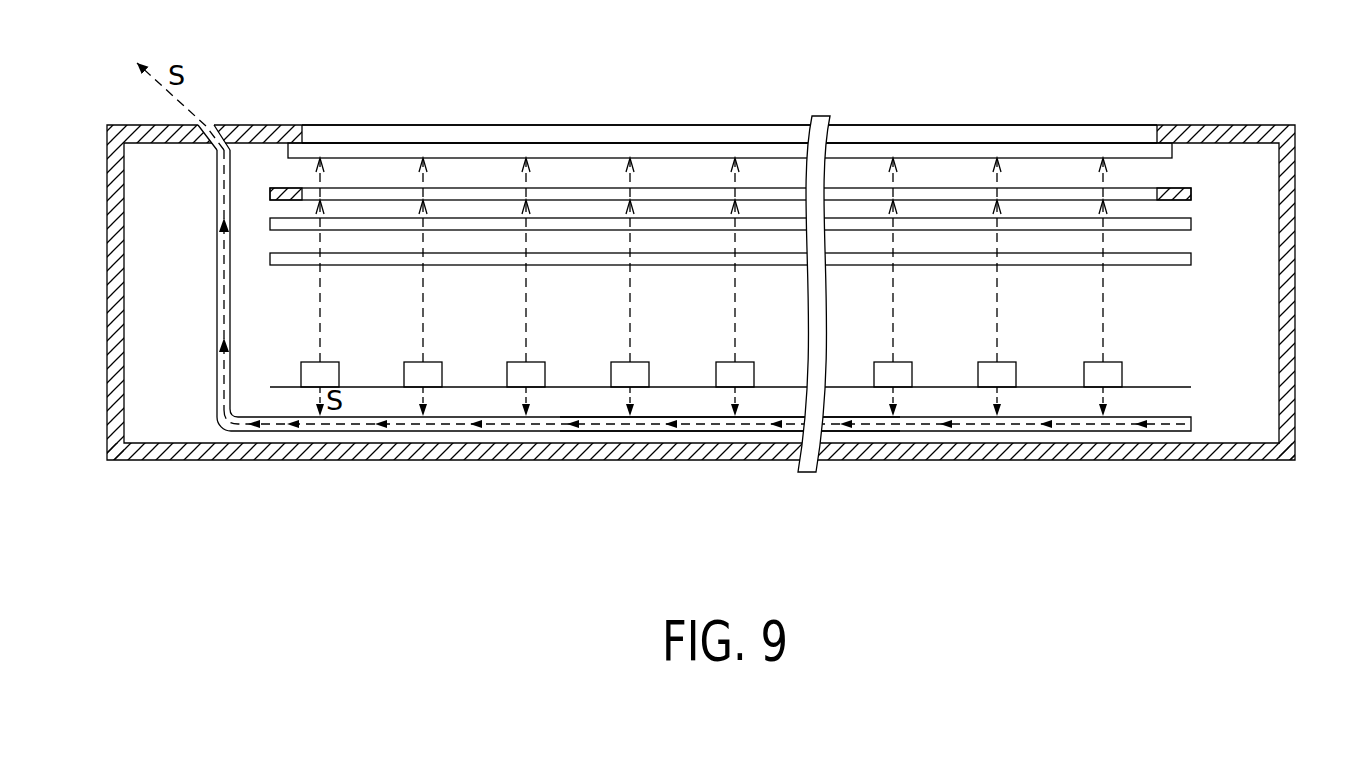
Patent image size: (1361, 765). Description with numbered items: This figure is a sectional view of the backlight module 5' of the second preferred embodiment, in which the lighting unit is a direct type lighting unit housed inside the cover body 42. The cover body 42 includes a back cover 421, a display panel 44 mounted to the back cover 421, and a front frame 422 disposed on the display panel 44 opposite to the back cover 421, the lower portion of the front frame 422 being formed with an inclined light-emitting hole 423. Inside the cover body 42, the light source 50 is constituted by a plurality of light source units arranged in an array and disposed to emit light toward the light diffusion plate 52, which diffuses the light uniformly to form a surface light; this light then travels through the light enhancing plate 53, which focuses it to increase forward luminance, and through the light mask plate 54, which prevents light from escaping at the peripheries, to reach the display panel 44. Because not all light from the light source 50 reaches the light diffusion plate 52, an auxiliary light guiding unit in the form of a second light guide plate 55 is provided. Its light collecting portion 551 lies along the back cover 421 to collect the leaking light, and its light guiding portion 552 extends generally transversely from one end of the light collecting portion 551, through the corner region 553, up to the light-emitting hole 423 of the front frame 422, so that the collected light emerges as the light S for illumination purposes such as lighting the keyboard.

The cover body 42 is at (1250, 112).
The back cover 421 is at (1195, 460).
The front frame 422 is at (277, 135).
The light-emitting hole 423 is at (204, 128).
The display panel 44 is at (1142, 152).
The backlight module 5' is at (805, 236).
The light source 50 is at (1107, 375).
The light diffusion plate 52 is at (1191, 262).
The light enhancing plate 53 is at (1191, 227).
The light mask plate 54 is at (1191, 196).
The second light guide plate 55 is at (1195, 424).
The light collecting portion 551 is at (713, 424).
The light guiding portion 552 is at (218, 330).
The conduit corner section 553 is at (268, 417).